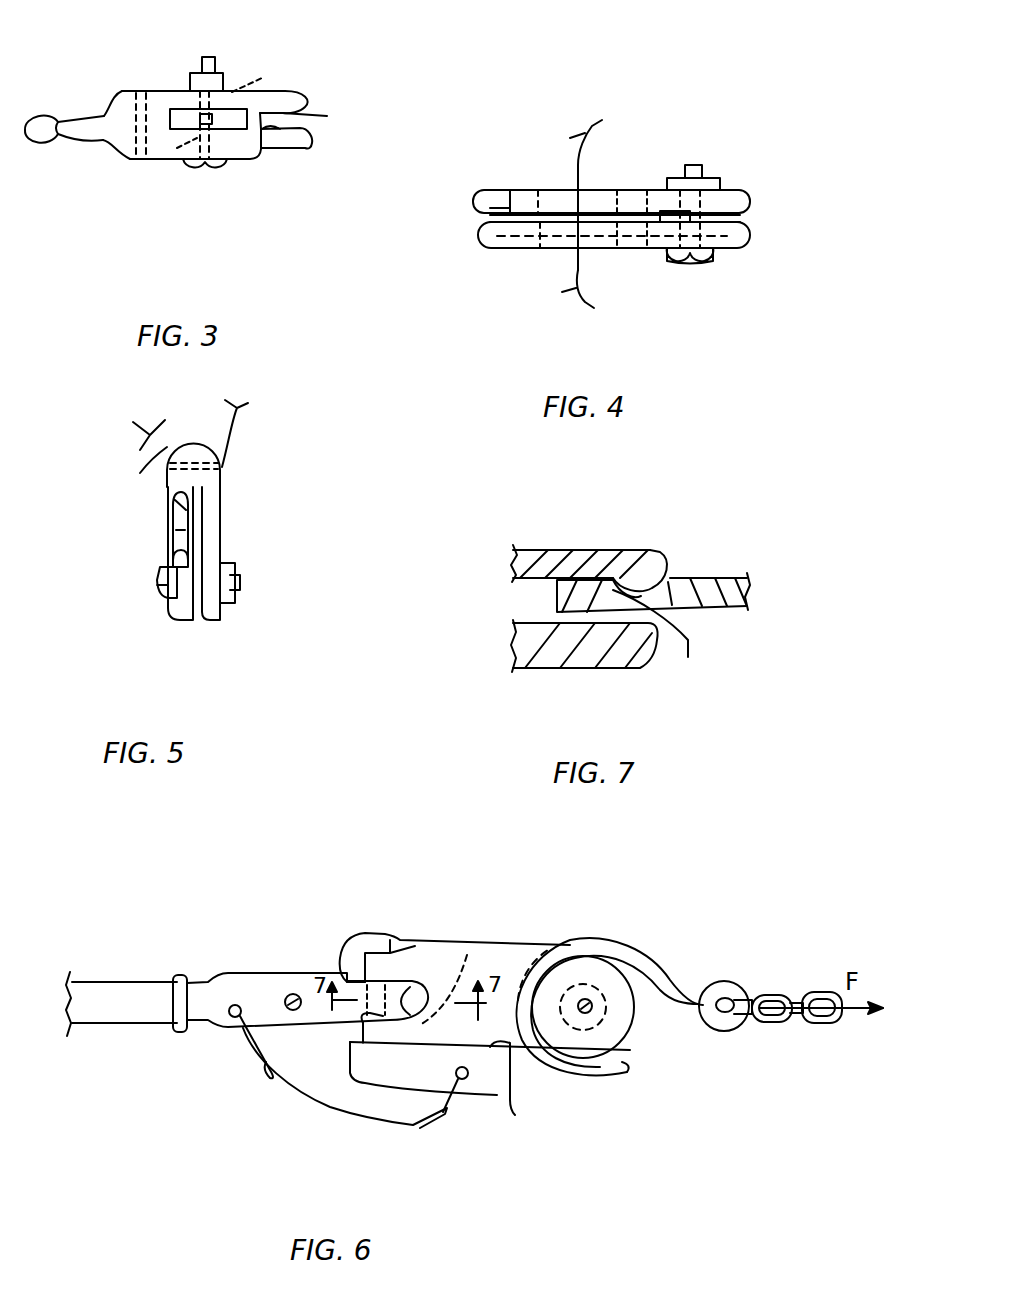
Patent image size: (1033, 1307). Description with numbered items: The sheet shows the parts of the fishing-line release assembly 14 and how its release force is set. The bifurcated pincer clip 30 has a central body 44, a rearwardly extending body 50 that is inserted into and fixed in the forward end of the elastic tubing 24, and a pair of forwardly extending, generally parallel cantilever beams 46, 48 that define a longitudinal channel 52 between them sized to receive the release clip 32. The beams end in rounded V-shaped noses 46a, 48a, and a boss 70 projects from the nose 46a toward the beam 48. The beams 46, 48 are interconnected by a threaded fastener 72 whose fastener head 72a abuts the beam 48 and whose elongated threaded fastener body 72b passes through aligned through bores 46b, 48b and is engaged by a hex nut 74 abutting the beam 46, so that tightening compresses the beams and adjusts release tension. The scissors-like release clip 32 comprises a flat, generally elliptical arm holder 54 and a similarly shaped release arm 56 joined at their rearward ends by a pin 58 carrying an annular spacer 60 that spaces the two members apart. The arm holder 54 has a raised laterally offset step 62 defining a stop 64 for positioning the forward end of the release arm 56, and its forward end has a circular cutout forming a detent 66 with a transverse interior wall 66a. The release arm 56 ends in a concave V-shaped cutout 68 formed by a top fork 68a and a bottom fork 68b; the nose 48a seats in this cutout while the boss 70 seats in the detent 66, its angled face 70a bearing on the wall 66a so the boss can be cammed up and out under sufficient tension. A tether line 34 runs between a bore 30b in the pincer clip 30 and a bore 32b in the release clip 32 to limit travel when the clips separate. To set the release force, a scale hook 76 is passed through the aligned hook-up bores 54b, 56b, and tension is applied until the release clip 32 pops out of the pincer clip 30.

In FIG. 6, the release assembly 14 is at (322, 835).
In FIG. 6, the elastic tubing 24 is at (98, 1028).
In FIG. 3, the pincer clip 30 is at (180, 237).
In FIG. 6, the pincer clip 30 is at (232, 968).
In FIG. 3, the bore 30b is at (157, 84).
In FIG. 4, the release clip 32 is at (497, 313).
In FIG. 5, the release clip 32 is at (103, 657).
In FIG. 6, the release clip 32 is at (372, 935).
In FIG. 5, the bore 32b is at (227, 477).
In FIG. 4, the tether line 34 is at (582, 143).
In FIG. 5, the tether line 34 is at (237, 423).
In FIG. 6, the tether line 34 is at (343, 1112).
In FIG. 3, the central body 44 is at (115, 99).
In FIG. 3, the cantilever beam 46 is at (305, 86).
In FIG. 7, the cantilever beam 46 is at (525, 558).
In FIG. 3, the forward end portion 46a is at (278, 92).
In FIG. 7, the forward end portion 46a is at (610, 552).
In FIG. 3, the through bore 46b is at (262, 78).
In FIG. 3, the cantilever beam 48 is at (238, 145).
In FIG. 7, the cantilever beam 48 is at (542, 662).
In FIG. 6, the cantilever beam 48 is at (308, 1018).
In FIG. 3, the forward end portion 48a is at (290, 144).
In FIG. 7, the forward end portion 48a is at (583, 668).
In FIG. 6, the forward end portion 48a is at (350, 1018).
In FIG. 3, the through bore 48b is at (153, 167).
In FIG. 3, the rearwardly extending body 50 is at (82, 122).
In FIG. 3, the longitudinal channel 52 is at (265, 126).
In FIG. 4, the arm holder 54 is at (503, 192).
In FIG. 5, the arm holder 54 is at (223, 495).
In FIG. 7, the arm holder 54 is at (747, 573).
In FIG. 6, the arm holder 54 is at (410, 945).
In FIG. 4, the hook-up bore 54b is at (645, 187).
In FIG. 4, the release arm 56 is at (498, 249).
In FIG. 5, the release arm 56 is at (160, 513).
In FIG. 6, the release arm 56 is at (507, 950).
In FIG. 4, the hook-up bore 56b is at (645, 251).
In FIG. 6, the hook-up bore 56b is at (537, 950).
In FIG. 4, the pin 58 is at (703, 180).
In FIG. 5, the pin 58 is at (167, 600).
In FIG. 6, the pin 58 is at (592, 1001).
In FIG. 4, the spacer 60 is at (705, 212).
In FIG. 5, the spacer 60 is at (200, 600).
In FIG. 4, the step 62 is at (540, 252).
In FIG. 5, the step 62 is at (167, 467).
In FIG. 4, the stop 64 is at (507, 218).
In FIG. 5, the stop 64 is at (167, 478).
In FIG. 6, the stop 64 is at (512, 1093).
In FIG. 4, the detent 66 is at (538, 186).
In FIG. 5, the detent 66 is at (223, 523).
In FIG. 7, the detent 66 is at (690, 580).
In FIG. 6, the detent 66 is at (467, 955).
In FIG. 7, the transverse interior wall 66a is at (628, 668).
In FIG. 5, the V-shaped cutout 68 is at (177, 532).
In FIG. 6, the V-shaped cutout 68 is at (373, 957).
In FIG. 5, the top fork 68a is at (173, 493).
In FIG. 5, the bottom fork 68b is at (177, 560).
In FIG. 3, the boss 70 is at (328, 112).
In FIG. 7, the boss 70 is at (645, 577).
In FIG. 7, the angled face 70a is at (672, 639).
In FIG. 3, the threaded fastener 72 is at (200, 56).
In FIG. 6, the threaded fastener 72 is at (292, 988).
In FIG. 3, the fastener head 72a is at (187, 165).
In FIG. 3, the fastener body 72b is at (217, 67).
In FIG. 3, the hex nut 74 is at (230, 77).
In FIG. 6, the hook 76 is at (623, 947).